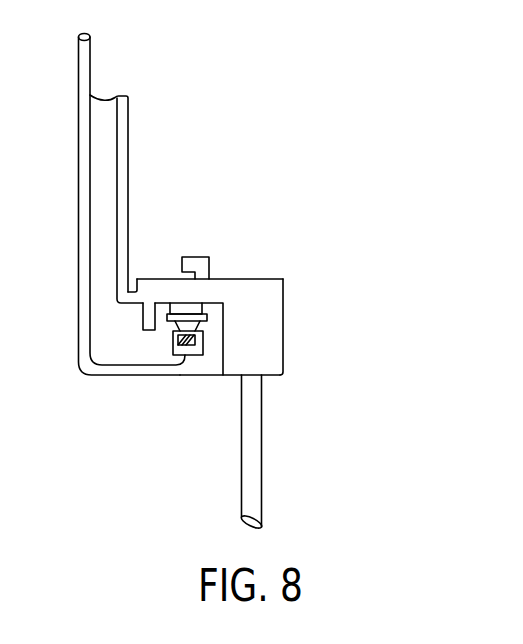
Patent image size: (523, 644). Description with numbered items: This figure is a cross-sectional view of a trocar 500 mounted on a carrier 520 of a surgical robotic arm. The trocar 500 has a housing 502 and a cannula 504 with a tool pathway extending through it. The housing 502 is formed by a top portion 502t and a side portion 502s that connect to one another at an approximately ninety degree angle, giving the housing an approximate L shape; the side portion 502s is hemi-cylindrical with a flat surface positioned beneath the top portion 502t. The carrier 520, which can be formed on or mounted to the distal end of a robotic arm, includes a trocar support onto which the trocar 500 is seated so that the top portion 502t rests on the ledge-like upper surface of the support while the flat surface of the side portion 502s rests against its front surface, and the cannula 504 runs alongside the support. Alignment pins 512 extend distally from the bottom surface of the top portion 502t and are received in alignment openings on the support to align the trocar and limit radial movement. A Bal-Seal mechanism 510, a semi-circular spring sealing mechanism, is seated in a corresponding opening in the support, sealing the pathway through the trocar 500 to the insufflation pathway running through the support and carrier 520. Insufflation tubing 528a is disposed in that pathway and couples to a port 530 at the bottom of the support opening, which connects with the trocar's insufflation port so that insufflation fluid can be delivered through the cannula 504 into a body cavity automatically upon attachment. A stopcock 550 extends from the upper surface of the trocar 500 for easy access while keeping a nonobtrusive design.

The trocar 500 is at (228, 282).
The housing 502 is at (284, 279).
The top portion 502t is at (263, 279).
The side portion 502s is at (283, 373).
The cannula 504 is at (262, 468).
The Bal-Seal mechanism 510 is at (230, 318).
The alignment pins 512 is at (142, 318).
The carrier 520 is at (157, 116).
The insufflation tubing 528a is at (91, 77).
The port 530 is at (204, 340).
The stopcock 550 is at (210, 257).